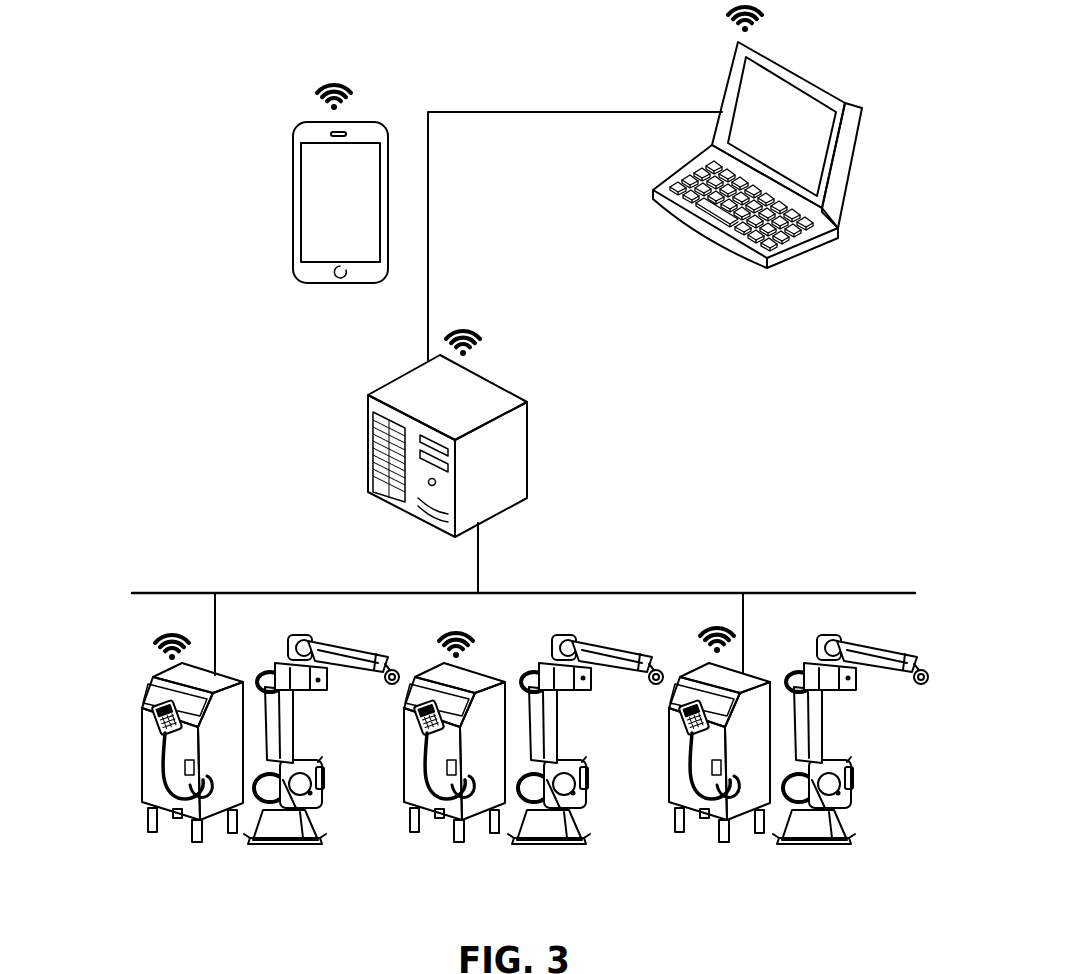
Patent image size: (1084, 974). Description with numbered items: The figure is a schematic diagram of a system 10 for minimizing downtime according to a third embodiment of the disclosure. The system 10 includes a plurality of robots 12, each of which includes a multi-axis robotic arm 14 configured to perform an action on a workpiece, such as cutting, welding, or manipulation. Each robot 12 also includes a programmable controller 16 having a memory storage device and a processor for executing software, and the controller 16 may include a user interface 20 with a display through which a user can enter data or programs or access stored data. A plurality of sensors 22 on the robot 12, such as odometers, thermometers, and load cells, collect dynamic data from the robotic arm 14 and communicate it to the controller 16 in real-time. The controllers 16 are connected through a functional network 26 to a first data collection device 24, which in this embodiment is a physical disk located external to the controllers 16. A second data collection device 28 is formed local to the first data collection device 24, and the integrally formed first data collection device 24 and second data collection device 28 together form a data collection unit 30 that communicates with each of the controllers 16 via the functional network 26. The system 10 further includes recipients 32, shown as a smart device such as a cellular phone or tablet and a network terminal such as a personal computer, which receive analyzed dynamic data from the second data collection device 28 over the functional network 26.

The system 10 is at (290, 62).
The robot 12 is at (183, 872).
The multi-axis robotic arm 14 is at (347, 652).
The programmable controller 16 is at (145, 687).
The user interface 20 is at (140, 752).
The sensors 22 is at (318, 681).
The first data collection device 24 is at (515, 450).
The functional network 26 is at (337, 593).
The second data collection device 28 is at (368, 442).
The data collection unit 30 is at (497, 369).
The recipient 32 is at (293, 204).